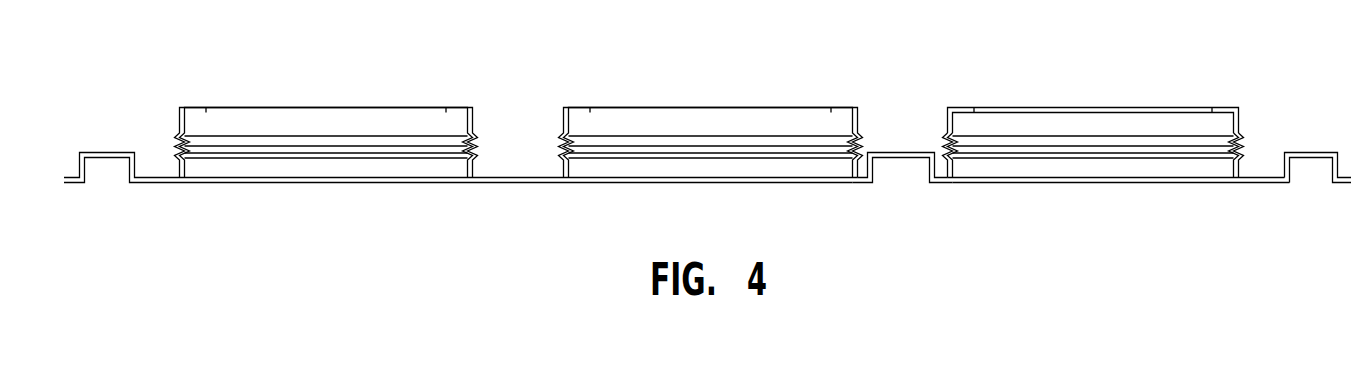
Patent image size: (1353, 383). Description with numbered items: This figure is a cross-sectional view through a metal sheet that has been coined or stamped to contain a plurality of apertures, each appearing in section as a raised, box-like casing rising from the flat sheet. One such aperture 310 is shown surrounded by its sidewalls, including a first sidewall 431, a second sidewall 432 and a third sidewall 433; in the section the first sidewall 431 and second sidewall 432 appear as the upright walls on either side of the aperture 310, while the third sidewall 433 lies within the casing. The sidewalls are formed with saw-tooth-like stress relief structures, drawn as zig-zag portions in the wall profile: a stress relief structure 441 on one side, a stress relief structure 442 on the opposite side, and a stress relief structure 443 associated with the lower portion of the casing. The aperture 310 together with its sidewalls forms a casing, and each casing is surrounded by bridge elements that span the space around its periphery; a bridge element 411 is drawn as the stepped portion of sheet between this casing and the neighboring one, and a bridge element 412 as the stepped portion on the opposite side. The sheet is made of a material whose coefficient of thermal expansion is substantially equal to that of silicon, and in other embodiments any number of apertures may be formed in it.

The aperture 310 is at (1057, 106).
The bridge element 411 is at (900, 152).
The bridge element 412 is at (1310, 152).
The first sidewall 431 is at (944, 116).
The second sidewall 432 is at (1240, 118).
The third sidewall 433 is at (1123, 132).
The stress relief structure 441 is at (940, 145).
The stress relief structure 442 is at (1241, 145).
The stress relief structure 443 is at (1083, 152).